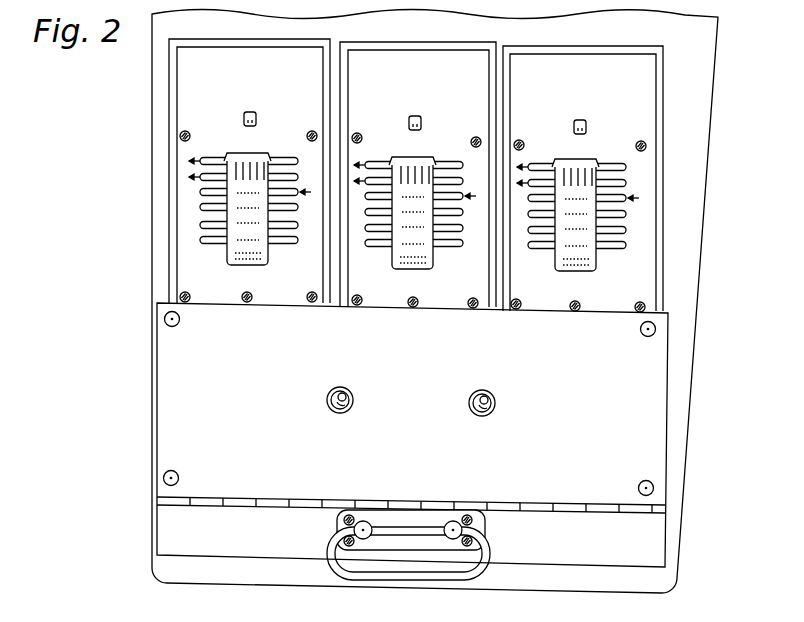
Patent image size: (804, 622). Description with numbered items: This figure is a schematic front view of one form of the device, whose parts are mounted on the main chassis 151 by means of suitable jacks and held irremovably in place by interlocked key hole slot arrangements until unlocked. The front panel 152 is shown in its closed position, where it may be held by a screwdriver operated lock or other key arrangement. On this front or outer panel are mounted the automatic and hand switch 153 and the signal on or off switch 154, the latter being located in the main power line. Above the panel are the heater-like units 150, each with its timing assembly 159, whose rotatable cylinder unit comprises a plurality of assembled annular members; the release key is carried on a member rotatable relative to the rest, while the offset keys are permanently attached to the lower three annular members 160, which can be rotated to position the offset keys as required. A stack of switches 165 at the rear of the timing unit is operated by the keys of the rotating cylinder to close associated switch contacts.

The heater unit 150 is at (614, 70).
The main chassis 151 is at (157, 422).
The front panel 152 is at (217, 444).
The automatic and hand switch 153 is at (495, 412).
The signal on or off switch 154 is at (330, 405).
The timing assembly 159 is at (200, 189).
The lower three annular members 160 is at (205, 240).
The stack of switches 165 is at (250, 112).